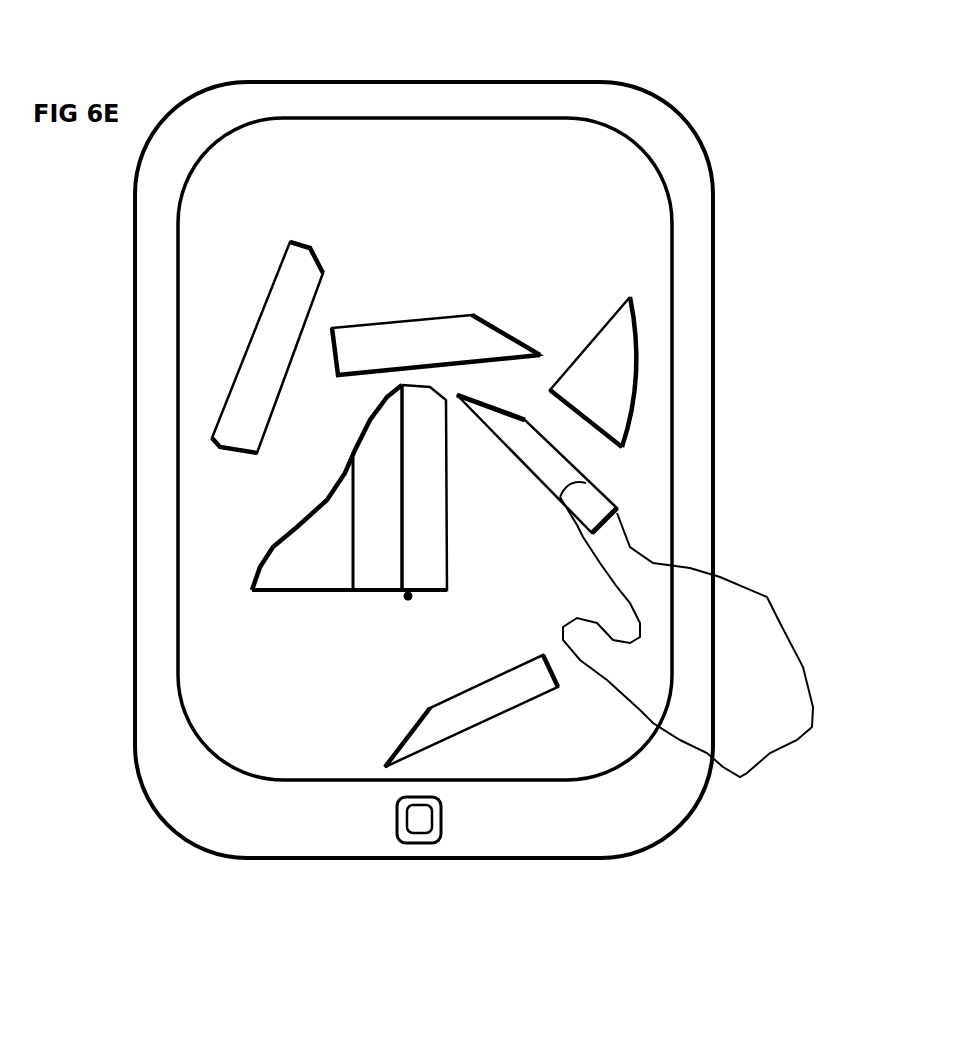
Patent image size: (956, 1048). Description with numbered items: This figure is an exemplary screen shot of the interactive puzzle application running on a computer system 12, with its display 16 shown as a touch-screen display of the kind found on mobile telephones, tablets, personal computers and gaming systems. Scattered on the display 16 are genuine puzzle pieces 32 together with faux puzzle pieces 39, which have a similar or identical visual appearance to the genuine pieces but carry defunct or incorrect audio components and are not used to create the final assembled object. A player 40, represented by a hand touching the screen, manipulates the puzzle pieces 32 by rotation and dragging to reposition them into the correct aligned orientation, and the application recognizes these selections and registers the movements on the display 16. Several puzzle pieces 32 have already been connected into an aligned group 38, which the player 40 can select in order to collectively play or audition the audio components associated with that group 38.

The computer system 12 is at (265, 80).
The display 16 is at (488, 113).
The puzzle pieces 32 is at (428, 573).
The group of connected or aligned puzzle pieces 38 is at (238, 560).
The faux puzzle pieces 39 is at (275, 352).
The player 40 is at (750, 703).